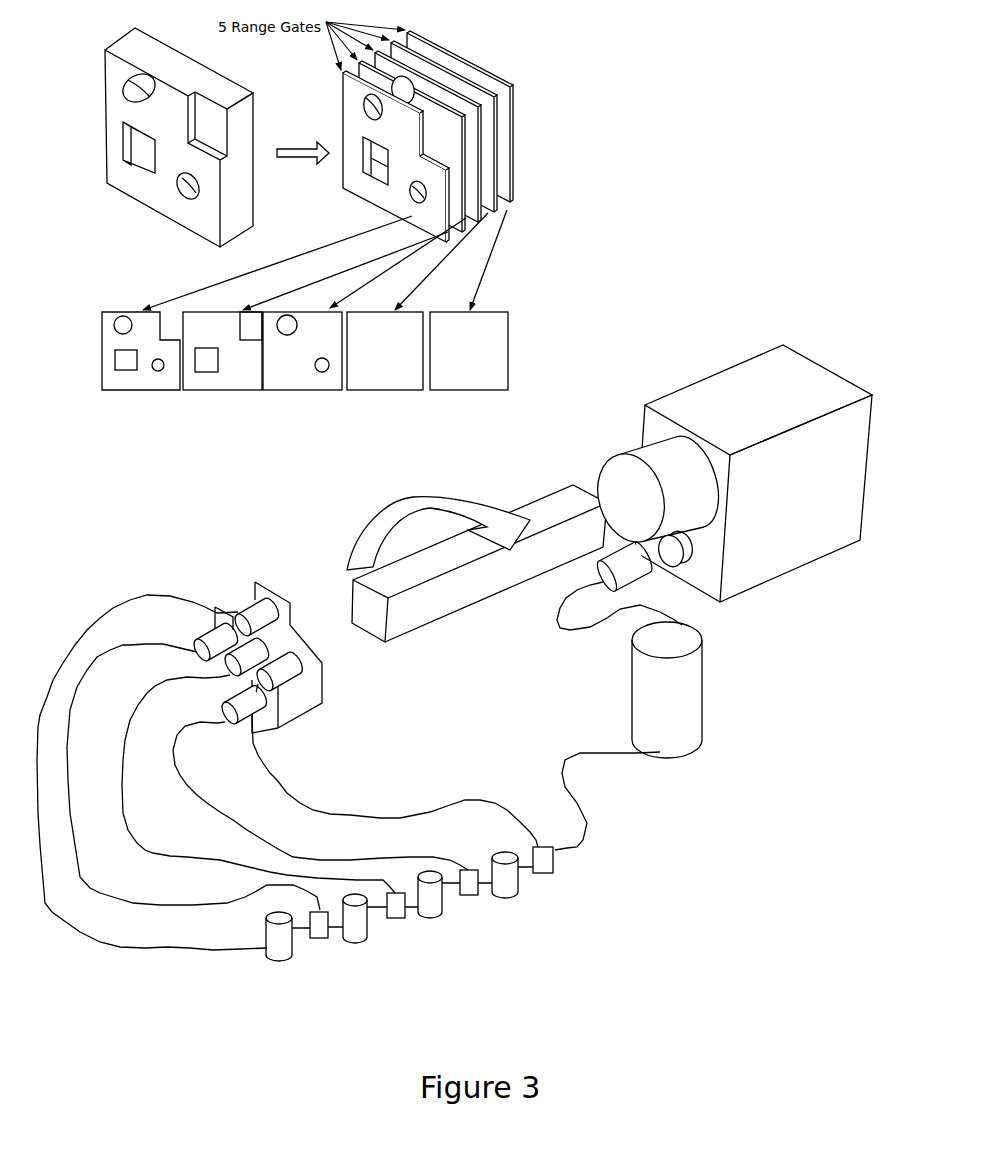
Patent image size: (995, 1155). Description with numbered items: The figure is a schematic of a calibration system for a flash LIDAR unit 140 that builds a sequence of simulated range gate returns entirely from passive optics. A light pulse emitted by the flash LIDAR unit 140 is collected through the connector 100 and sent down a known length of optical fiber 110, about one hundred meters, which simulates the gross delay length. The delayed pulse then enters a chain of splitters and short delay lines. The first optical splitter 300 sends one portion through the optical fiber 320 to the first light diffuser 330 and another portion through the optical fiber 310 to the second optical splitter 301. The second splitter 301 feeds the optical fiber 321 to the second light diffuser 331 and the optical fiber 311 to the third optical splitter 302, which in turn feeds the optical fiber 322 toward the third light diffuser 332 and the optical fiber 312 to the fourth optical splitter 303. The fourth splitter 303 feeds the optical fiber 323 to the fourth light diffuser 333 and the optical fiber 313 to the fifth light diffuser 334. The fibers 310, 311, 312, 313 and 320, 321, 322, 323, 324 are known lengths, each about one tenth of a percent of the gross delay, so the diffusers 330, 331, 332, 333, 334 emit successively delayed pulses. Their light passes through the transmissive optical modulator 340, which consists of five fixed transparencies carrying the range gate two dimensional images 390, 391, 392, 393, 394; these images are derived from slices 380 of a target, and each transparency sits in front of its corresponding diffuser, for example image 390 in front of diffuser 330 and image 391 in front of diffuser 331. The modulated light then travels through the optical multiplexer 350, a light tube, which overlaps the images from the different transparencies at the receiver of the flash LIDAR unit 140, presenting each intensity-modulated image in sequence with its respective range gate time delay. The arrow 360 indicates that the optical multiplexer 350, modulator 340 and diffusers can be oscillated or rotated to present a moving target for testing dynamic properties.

The connector 100 is at (637, 575).
The optical fiber 110 is at (677, 693).
The flash LIDAR unit 140 is at (790, 409).
The optical splitter 300 is at (545, 862).
The second optical splitter 301 is at (430, 895).
The third optical splitter 302 is at (392, 908).
The fourth optical splitter 303 is at (318, 933).
The optical fiber 310 is at (515, 888).
The optical fiber 311 is at (467, 888).
The optical fiber 312 is at (360, 938).
The optical fiber 313 is at (278, 942).
The optical fiber 320 is at (288, 787).
The optical fiber 321 is at (260, 838).
The optical fiber 322 is at (167, 843).
The optical fiber 323 is at (135, 903).
The optical fiber 324 is at (120, 947).
The first light diffuser 330 is at (287, 687).
The second light diffuser 331 is at (243, 717).
The third light diffuser 332 is at (257, 650).
The fourth light diffuser 333 is at (210, 637).
The fifth light diffuser 334 is at (248, 612).
The transmissive optical modulator 340 is at (275, 595).
The optical multiplexer 350 is at (469, 602).
The arrow 360 is at (368, 532).
The slices 380 is at (517, 65).
The first range gate two dimensional image 390 is at (141, 379).
The second range gate two dimensional image 391 is at (222, 379).
The range gate two dimensional image 392 is at (302, 379).
The range gate two dimensional image 393 is at (385, 379).
The range gate two dimensional image 394 is at (469, 379).